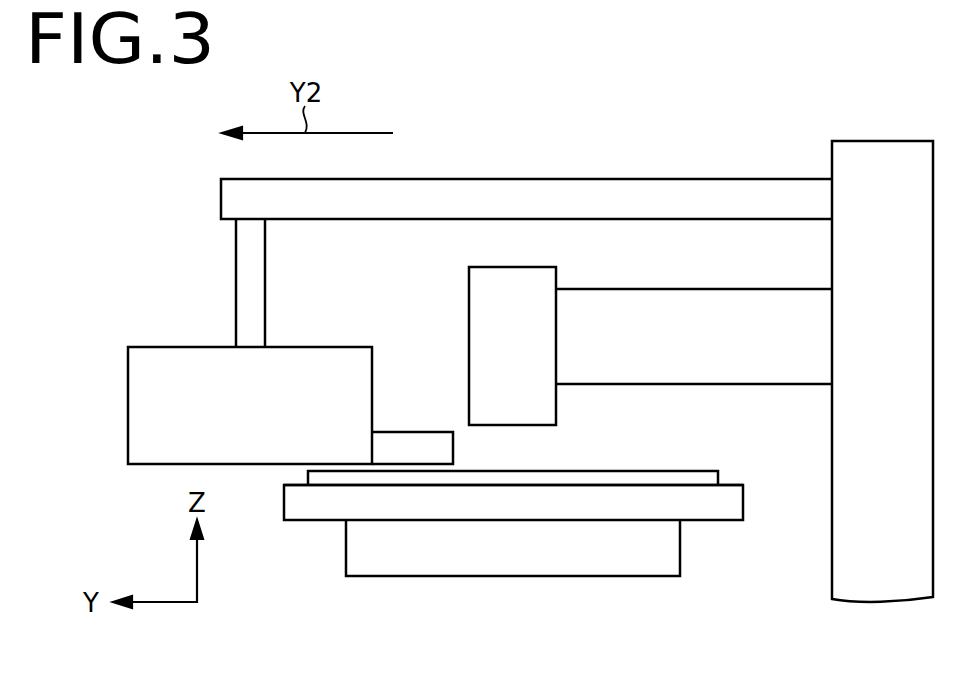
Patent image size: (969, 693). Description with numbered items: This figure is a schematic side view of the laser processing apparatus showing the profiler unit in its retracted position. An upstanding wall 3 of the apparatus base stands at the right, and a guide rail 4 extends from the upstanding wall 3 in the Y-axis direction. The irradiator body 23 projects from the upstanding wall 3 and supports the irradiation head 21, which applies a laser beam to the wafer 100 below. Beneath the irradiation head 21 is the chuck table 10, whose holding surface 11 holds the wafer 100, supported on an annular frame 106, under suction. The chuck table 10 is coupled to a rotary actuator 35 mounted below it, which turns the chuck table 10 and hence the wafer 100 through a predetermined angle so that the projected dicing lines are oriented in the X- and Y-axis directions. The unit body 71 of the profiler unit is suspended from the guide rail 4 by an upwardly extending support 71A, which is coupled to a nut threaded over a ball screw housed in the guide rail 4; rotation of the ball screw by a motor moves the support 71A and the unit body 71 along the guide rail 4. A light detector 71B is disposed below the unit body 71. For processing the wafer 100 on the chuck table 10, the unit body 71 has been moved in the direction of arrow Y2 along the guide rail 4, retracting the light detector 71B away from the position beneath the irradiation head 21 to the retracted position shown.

The upstanding wall 3 is at (881, 150).
The guide rail 4 is at (425, 190).
The irradiation head 21 is at (511, 278).
The irradiator body 23 is at (789, 302).
The unit body 71 is at (334, 355).
The support 71A is at (243, 282).
The light detector 71B is at (453, 447).
The chuck table 10 is at (383, 510).
The holding surface 11 is at (609, 486).
The rotary actuator 35 is at (511, 560).
The wafer 100 is at (549, 555).
The annular frame 106 is at (708, 479).